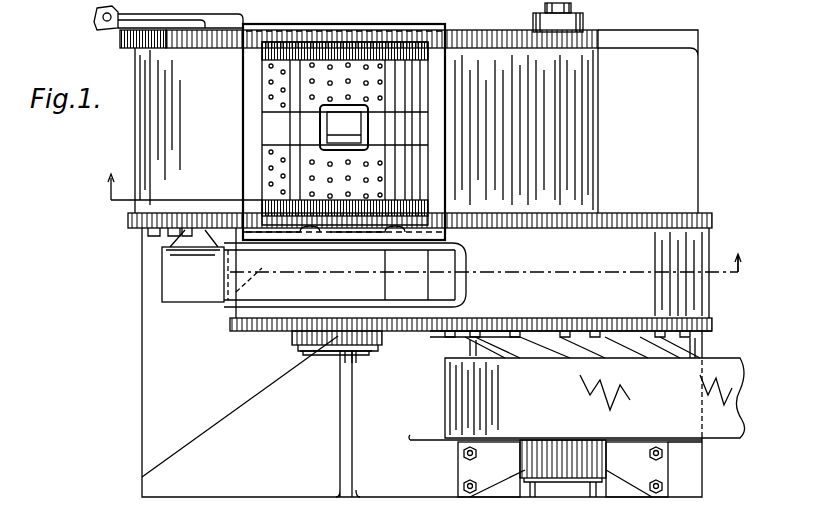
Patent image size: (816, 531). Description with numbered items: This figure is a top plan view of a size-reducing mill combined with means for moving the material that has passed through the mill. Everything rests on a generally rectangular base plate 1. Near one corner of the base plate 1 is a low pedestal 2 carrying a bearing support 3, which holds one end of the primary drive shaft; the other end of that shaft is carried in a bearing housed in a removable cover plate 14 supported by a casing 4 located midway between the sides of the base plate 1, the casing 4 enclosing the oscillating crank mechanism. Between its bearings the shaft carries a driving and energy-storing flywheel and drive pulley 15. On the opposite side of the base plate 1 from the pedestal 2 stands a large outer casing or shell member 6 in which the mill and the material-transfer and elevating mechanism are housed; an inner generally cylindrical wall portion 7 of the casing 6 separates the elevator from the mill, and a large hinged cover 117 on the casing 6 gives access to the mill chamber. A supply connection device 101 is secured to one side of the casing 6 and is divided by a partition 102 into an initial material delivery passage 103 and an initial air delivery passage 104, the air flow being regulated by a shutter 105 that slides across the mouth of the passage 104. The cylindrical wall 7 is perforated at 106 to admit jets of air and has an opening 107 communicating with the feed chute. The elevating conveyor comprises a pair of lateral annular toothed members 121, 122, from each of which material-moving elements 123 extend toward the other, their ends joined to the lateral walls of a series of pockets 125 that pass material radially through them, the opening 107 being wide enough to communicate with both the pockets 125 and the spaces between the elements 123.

The base plate 1 is at (305, 488).
The pedestal 2 is at (690, 468).
The bearing support 3 is at (648, 480).
The casing 4 is at (718, 228).
The outer casing or shell member 6 is at (590, 100).
The inner cylindrical wall portion 7 is at (266, 176).
The removable cover plate 14 is at (704, 334).
The flywheel and drive pulley 15 is at (575, 442).
The supply connection device 101 is at (470, 254).
The partition 102 is at (430, 292).
The initial material delivery passage 103 is at (452, 292).
The initial air delivery passage 104 is at (380, 293).
The shutter 105 is at (180, 285).
The perforations 106 is at (282, 92).
The opening 107 is at (413, 92).
The hinged cover 117 is at (148, 18).
The annular toothed member 121 is at (262, 58).
The annular toothed member 122 is at (412, 212).
The material-moving elements 123 is at (292, 96).
The pockets 125 is at (330, 128).